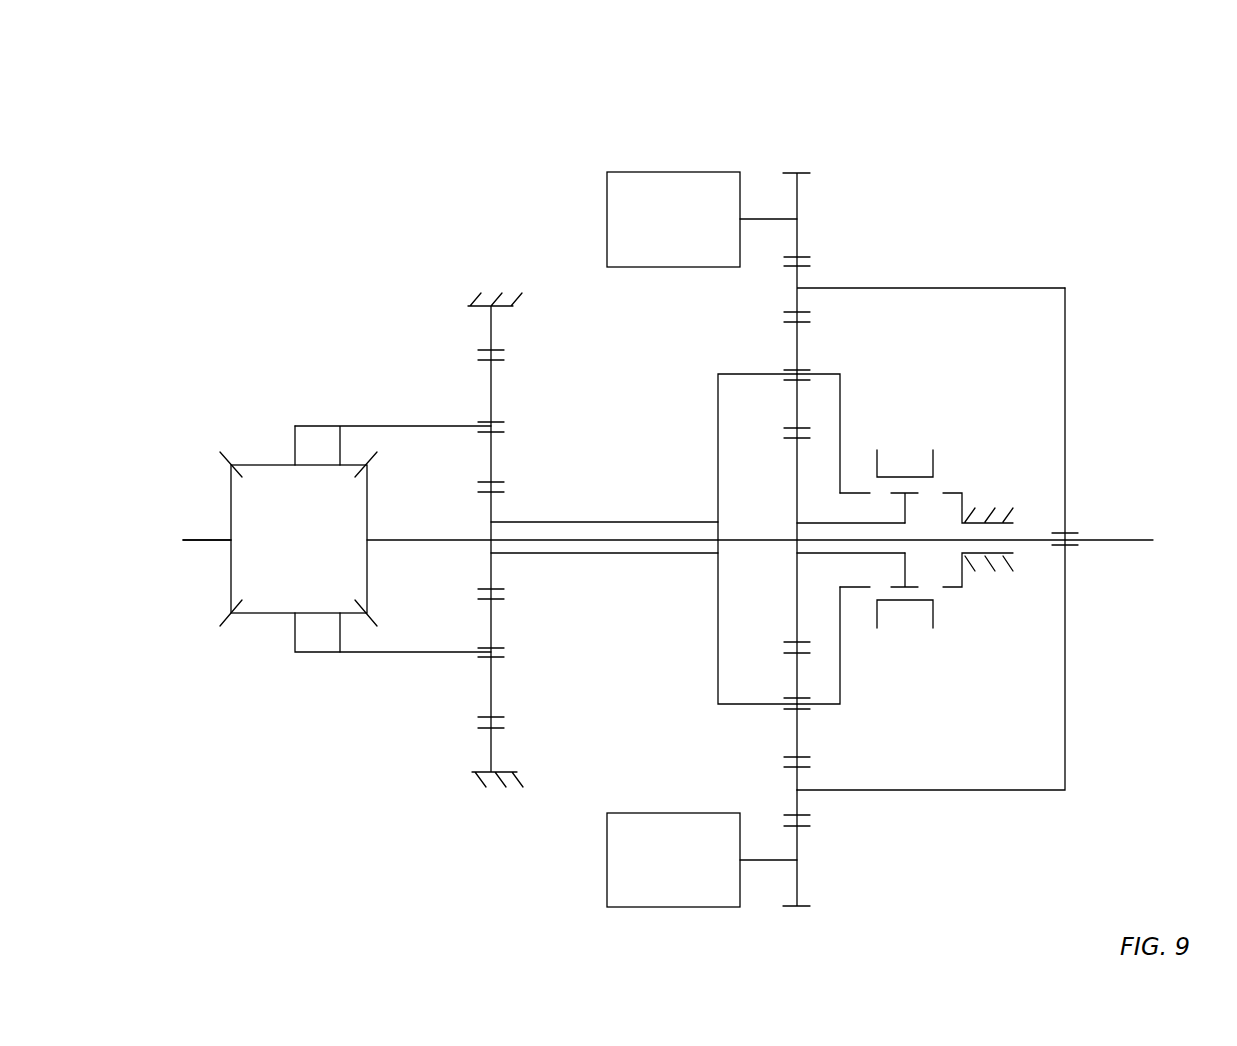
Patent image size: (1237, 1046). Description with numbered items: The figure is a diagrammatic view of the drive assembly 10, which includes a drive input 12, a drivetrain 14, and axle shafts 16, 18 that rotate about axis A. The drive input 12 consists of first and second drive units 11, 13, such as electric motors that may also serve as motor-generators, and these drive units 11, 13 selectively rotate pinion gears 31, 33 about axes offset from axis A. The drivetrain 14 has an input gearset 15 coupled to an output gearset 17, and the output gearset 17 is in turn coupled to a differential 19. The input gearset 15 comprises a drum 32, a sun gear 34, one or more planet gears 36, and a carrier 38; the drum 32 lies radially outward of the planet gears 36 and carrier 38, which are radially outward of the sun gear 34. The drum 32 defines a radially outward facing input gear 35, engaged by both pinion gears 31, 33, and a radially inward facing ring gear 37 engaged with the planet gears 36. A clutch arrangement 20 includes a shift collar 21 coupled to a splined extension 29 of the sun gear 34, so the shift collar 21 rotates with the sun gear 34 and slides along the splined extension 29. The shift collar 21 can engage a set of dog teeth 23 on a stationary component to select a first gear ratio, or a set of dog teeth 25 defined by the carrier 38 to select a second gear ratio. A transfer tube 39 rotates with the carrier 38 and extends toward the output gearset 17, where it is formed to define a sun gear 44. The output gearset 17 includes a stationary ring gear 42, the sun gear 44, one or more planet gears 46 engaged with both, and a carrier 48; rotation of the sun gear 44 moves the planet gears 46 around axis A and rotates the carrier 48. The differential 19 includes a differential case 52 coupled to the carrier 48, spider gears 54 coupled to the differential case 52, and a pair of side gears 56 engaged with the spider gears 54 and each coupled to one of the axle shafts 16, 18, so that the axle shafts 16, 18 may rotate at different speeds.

The drive assembly 10 is at (1092, 158).
The first drive unit 11 is at (599, 862).
The drive input 12 is at (708, 155).
The second drive unit 13 is at (668, 158).
The drivetrain 14 is at (400, 335).
The input gearset 15 is at (1122, 213).
The axle shaft 16 is at (1136, 538).
The output gearset 17 is at (452, 348).
The axle shaft 18 is at (197, 540).
The differential 19 is at (228, 423).
The clutch arrangement 20 is at (995, 363).
The shift collar 21 is at (892, 455).
The dog teeth 23 is at (944, 480).
The dog teeth 25 is at (851, 486).
The splined extension 29 is at (914, 497).
The pinion gear 31 is at (802, 915).
The drum 32 is at (1037, 805).
The pinion gear 33 is at (800, 158).
The sun gear 34 is at (812, 601).
The input gear 35 is at (781, 818).
The planet gears 36 is at (805, 742).
The ring gear 37 is at (781, 762).
The carrier 38 is at (852, 708).
The transfer tube 39 is at (632, 568).
The stationary ring gear 42 is at (478, 752).
The sun gear 44 is at (499, 588).
The planet gears 46 is at (478, 683).
The carrier 48 is at (367, 660).
The differential case 52 is at (291, 442).
The spider gears 54 is at (342, 458).
The side gears 56 is at (372, 510).